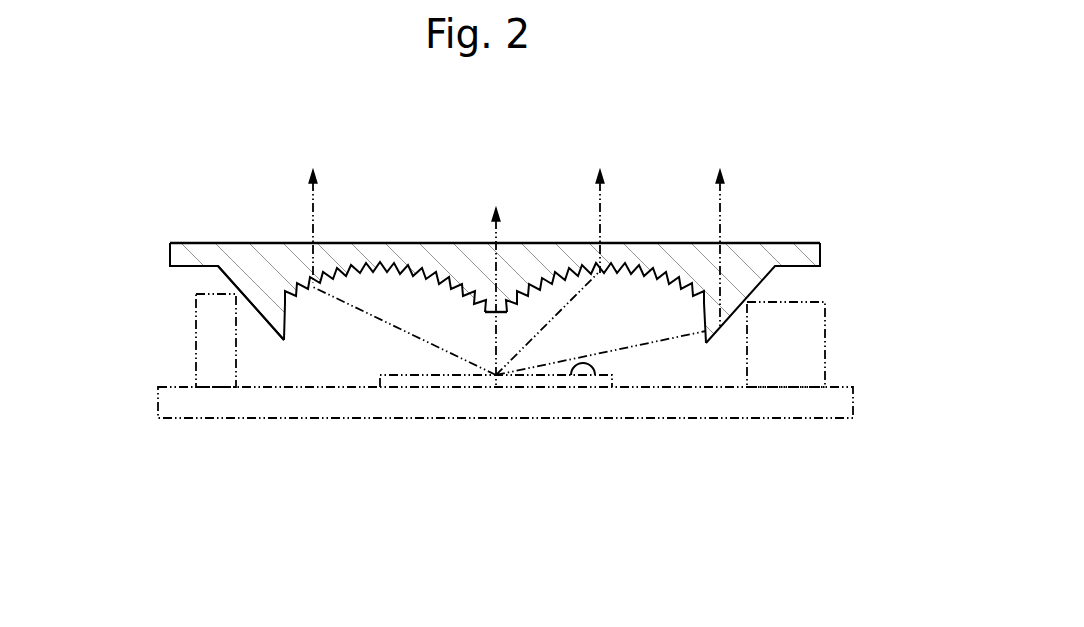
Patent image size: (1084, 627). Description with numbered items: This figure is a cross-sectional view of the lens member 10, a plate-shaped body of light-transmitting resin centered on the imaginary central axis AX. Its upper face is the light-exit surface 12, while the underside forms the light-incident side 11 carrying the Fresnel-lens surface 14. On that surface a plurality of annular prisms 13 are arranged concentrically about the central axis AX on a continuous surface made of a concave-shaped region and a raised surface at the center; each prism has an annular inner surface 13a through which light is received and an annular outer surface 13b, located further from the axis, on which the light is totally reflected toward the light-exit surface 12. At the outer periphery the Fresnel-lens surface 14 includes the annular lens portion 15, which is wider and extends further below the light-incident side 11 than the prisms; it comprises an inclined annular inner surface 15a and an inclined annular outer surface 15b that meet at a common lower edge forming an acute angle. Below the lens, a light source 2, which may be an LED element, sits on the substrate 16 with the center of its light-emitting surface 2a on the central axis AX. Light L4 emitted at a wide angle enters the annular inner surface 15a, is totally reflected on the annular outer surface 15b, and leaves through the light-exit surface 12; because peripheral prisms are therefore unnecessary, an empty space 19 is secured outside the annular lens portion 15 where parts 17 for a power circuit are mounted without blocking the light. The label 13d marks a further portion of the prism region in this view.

The lens member 10 is at (762, 165).
The light-incident side 11 is at (525, 312).
The light-exit surface 12 is at (377, 243).
The annular prisms 13 is at (317, 289).
The annular inner surface 13a is at (690, 301).
The annular outer surface 13b is at (703, 295).
The central prism portion 13d is at (503, 335).
The Fresnel-lens surface 14 is at (397, 357).
The annular lens portion 15 is at (340, 482).
The annular inner surface 15a is at (285, 342).
The annular outer surface 15b is at (266, 328).
The substrate 16 is at (758, 405).
The parts for a power circuit 17 is at (196, 359).
The empty space 19 is at (178, 293).
The light source 2 is at (625, 395).
The light-emitting surface 2a is at (596, 385).
The central axis AX is at (495, 231).
The light L4 is at (718, 212).